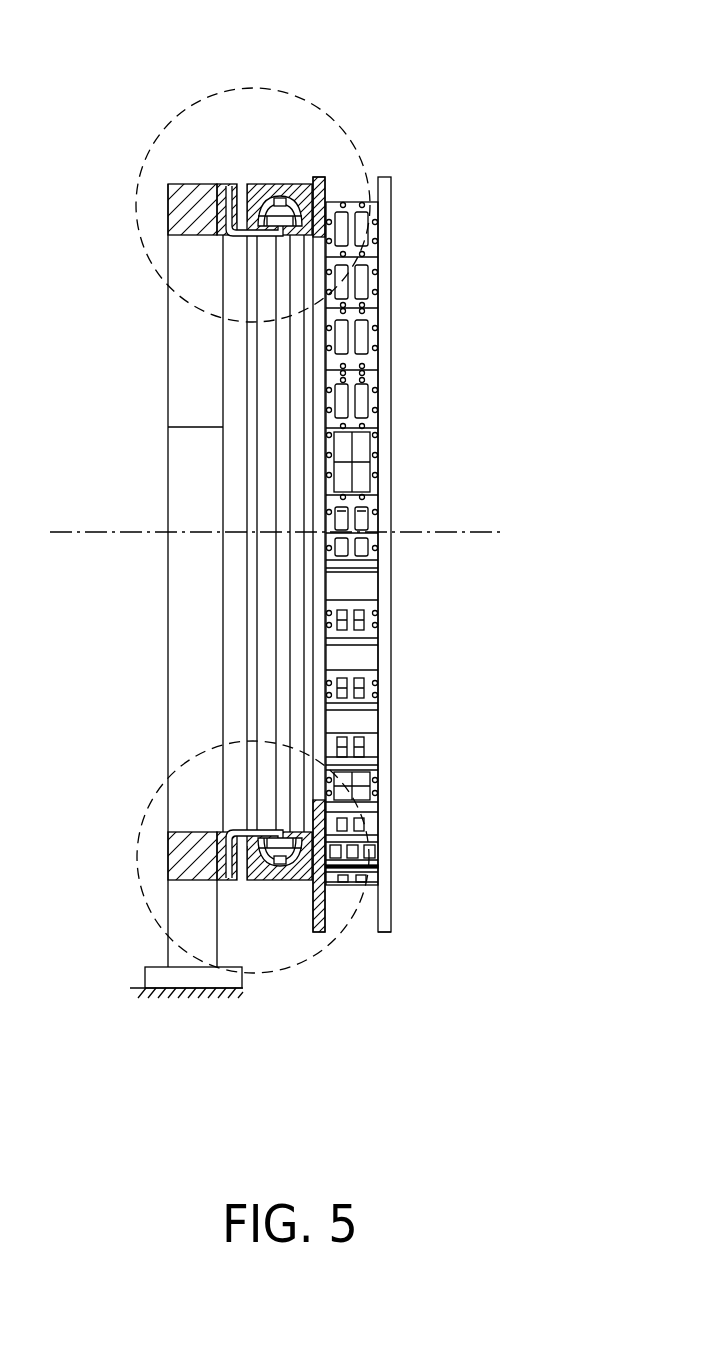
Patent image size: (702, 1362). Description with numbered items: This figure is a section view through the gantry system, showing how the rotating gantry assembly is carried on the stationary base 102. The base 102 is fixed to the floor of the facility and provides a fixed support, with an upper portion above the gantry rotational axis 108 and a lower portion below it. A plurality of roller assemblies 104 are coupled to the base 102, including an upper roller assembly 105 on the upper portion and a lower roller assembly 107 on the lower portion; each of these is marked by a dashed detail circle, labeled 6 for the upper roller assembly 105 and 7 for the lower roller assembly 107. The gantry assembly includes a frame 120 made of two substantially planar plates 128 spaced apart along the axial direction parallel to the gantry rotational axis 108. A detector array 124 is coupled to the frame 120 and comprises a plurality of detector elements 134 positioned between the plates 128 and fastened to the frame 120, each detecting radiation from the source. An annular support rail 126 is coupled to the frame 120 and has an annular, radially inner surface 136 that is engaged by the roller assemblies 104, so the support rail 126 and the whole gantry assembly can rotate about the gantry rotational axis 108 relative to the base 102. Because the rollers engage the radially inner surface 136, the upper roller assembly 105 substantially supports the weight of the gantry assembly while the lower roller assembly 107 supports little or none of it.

The base 102 is at (200, 470).
The roller assemblies 104 is at (232, 533).
The upper roller assembly 105 is at (228, 120).
The lower roller assembly 107 is at (283, 893).
The gantry rotational axis 108 is at (487, 526).
The frame 120 is at (376, 951).
The detector array 124 is at (372, 383).
The annular support rail 126 is at (286, 180).
The plates 128 is at (383, 178).
The detector elements 134 is at (365, 633).
The radially inner surface 136 is at (268, 347).
The detail view circle 6 is at (163, 128).
The detail view circle 7 is at (152, 798).